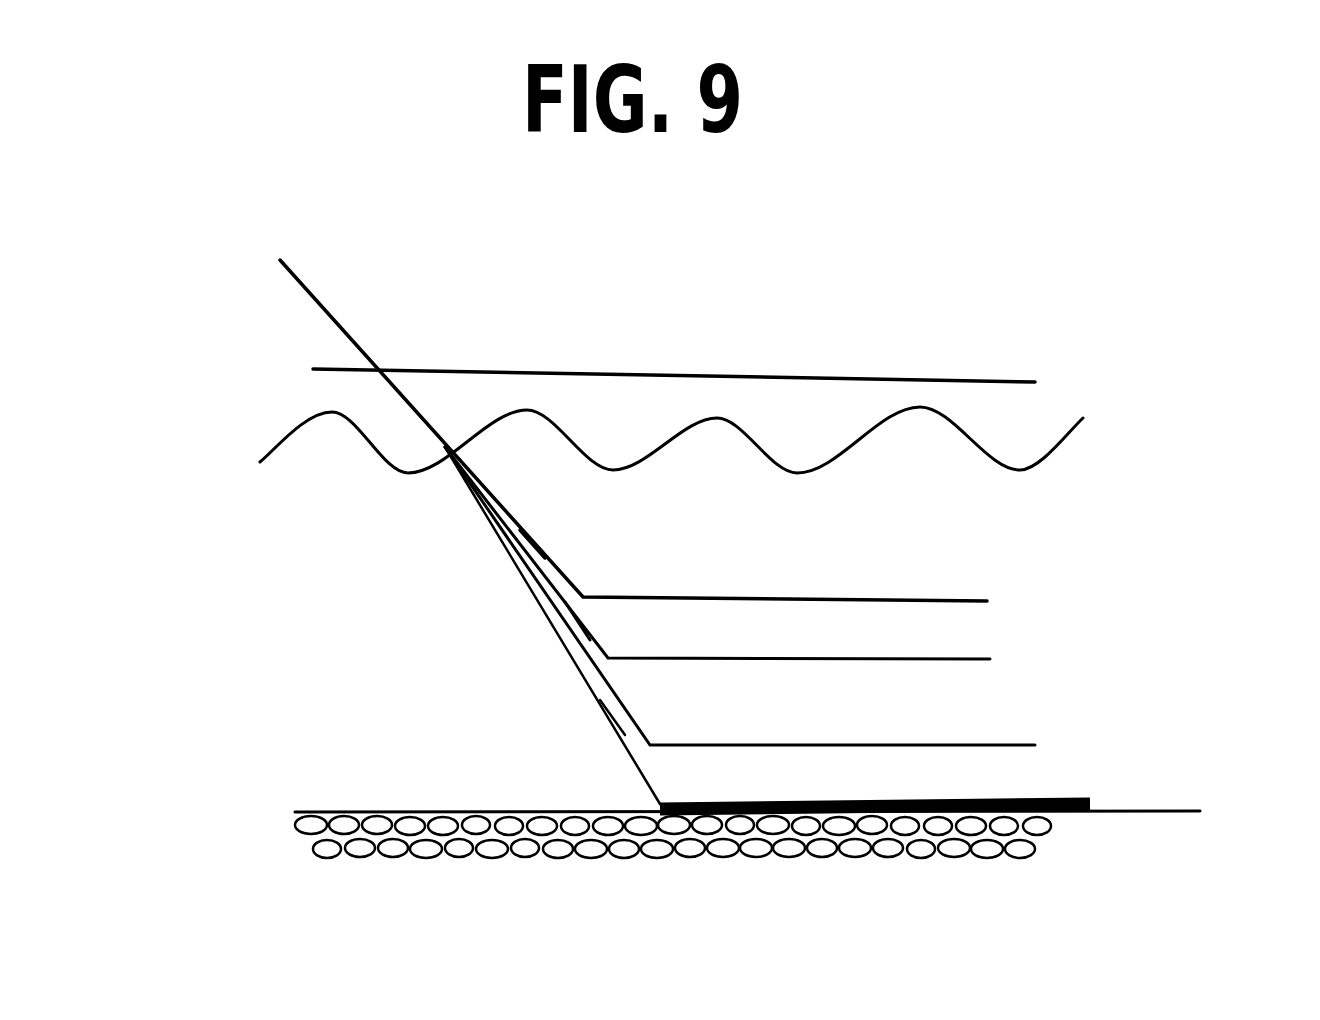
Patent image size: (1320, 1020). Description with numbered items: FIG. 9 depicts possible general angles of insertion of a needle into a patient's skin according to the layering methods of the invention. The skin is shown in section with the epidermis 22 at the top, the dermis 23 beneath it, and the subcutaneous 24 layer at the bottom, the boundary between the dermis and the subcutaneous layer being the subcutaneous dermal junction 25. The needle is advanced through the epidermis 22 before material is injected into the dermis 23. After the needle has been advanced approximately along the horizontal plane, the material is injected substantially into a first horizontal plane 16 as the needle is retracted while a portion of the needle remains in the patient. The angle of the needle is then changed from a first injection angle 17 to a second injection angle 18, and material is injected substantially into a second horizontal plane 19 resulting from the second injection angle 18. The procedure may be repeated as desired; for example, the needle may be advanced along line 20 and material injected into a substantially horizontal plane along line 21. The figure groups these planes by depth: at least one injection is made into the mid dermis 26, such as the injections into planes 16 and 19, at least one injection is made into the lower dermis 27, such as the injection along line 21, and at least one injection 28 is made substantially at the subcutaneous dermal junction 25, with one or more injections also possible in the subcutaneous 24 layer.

The first horizontal plane 16 is at (777, 600).
The first injection angle 17 is at (538, 547).
The second injection angle 18 is at (586, 628).
The second horizontal plane 19 is at (782, 657).
The needle advance line 20 is at (620, 708).
The injection line 21 is at (768, 738).
The epidermis 22 is at (231, 380).
The dermis 23 is at (262, 791).
The subcutaneous layer 24 is at (258, 803).
The subcutaneous dermal junction 25 is at (778, 809).
The mid dermis 26 is at (1003, 582).
The lower dermis 27 is at (1042, 690).
The injection at subcutaneous dermal junction 28 is at (785, 800).